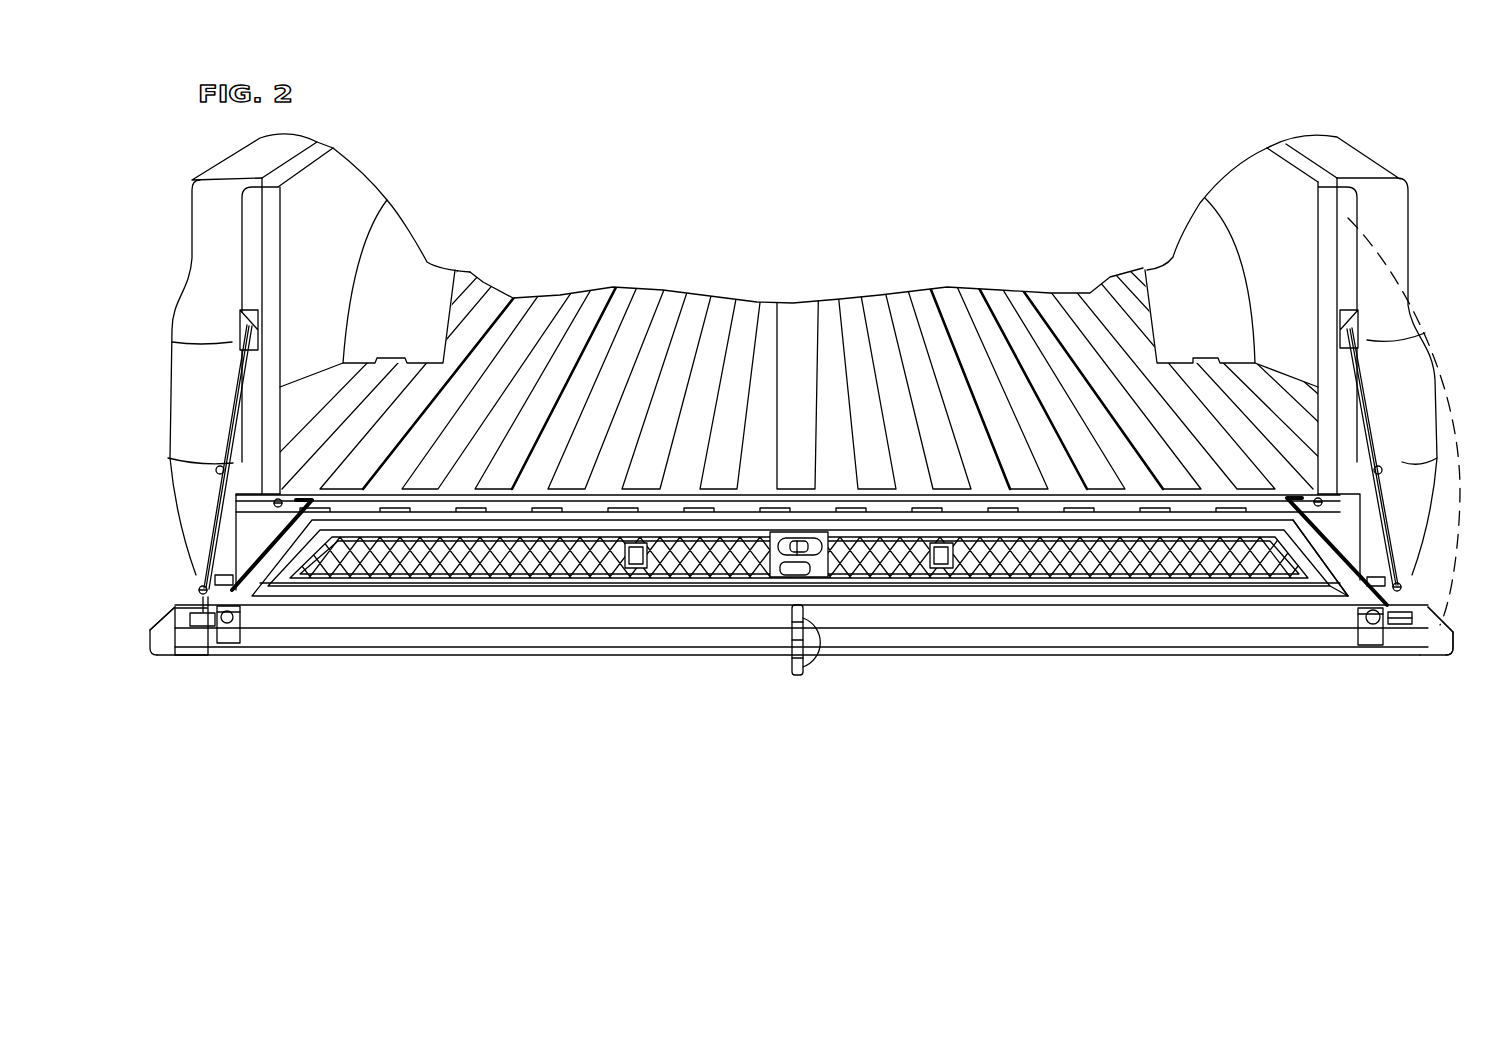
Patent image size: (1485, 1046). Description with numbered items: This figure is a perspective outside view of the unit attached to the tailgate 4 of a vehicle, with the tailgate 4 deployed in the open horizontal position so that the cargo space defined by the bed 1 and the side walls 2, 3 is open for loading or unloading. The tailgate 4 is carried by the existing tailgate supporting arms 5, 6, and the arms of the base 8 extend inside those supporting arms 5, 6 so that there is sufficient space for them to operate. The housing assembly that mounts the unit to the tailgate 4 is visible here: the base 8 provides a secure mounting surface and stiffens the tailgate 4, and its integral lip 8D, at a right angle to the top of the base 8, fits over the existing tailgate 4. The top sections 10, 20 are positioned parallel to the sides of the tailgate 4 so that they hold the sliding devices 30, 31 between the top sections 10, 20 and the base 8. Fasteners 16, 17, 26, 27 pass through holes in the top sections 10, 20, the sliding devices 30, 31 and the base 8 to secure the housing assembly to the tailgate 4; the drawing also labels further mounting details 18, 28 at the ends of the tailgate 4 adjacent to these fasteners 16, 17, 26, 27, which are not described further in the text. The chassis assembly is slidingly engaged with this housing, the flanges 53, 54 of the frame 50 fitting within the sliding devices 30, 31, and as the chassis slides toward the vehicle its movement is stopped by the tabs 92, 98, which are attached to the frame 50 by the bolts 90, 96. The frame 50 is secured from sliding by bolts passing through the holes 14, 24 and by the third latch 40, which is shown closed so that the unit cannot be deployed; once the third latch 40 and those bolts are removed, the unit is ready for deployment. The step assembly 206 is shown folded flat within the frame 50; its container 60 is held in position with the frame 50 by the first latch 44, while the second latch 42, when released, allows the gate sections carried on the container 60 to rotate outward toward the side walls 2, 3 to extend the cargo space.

The bed 1 is at (920, 295).
The side wall 2 is at (1247, 193).
The side wall 3 is at (358, 187).
The tailgate 4 is at (177, 618).
The tailgate supporting arm 5 is at (1375, 435).
The tailgate supporting arm 6 is at (242, 397).
The base 8 is at (397, 647).
The lip 8D is at (337, 647).
The top section 10 is at (1353, 548).
The hole 14 is at (1398, 625).
The fastener 16 is at (200, 588).
The fastener 17 is at (278, 503).
The right frame edge 18 is at (1363, 585).
The top section 20 is at (245, 547).
The hole 24 is at (193, 618).
The fastener 26 is at (1337, 493).
The fastener 27 is at (1397, 585).
The left strut bolt 28 is at (220, 578).
The sliding device 30 is at (1440, 619).
The sliding device 31 is at (160, 640).
The third latch 40 is at (797, 677).
The second latch 42 is at (780, 578).
The first latch 44 is at (807, 538).
The frame 50 is at (950, 617).
The flange 53 is at (1390, 613).
The flange 54 is at (200, 612).
The container 60 is at (1330, 582).
The bolt 90 is at (1370, 622).
The tab 92 is at (1375, 633).
The bolt 96 is at (235, 615).
The tab 98 is at (230, 633).
The step assembly 206 is at (677, 620).